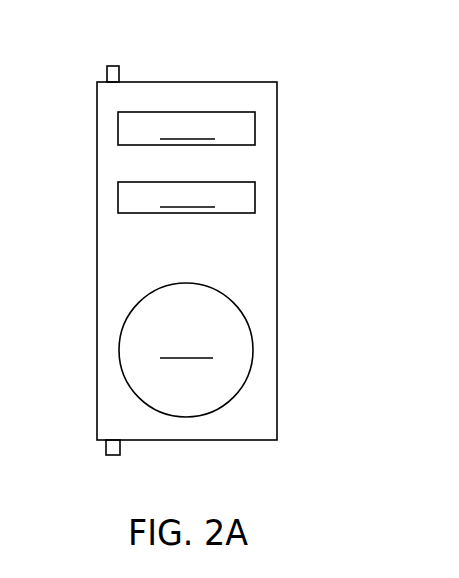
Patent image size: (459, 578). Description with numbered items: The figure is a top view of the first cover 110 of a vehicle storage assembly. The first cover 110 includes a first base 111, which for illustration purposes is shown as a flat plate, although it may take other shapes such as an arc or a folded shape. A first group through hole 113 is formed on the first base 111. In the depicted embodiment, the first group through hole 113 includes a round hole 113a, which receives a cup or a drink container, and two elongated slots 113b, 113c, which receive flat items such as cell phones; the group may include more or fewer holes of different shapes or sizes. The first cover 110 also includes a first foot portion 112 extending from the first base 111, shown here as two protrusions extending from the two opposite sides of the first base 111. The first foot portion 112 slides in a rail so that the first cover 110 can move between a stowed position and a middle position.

The first cover 110 is at (228, 81).
The first base 111 is at (113, 264).
The first foot portion 112 is at (113, 66).
The first group through hole 113 is at (254, 264).
The round hole 113a is at (186, 350).
The elongated slot 113b is at (186, 128).
The elongated slot 113c is at (186, 197).